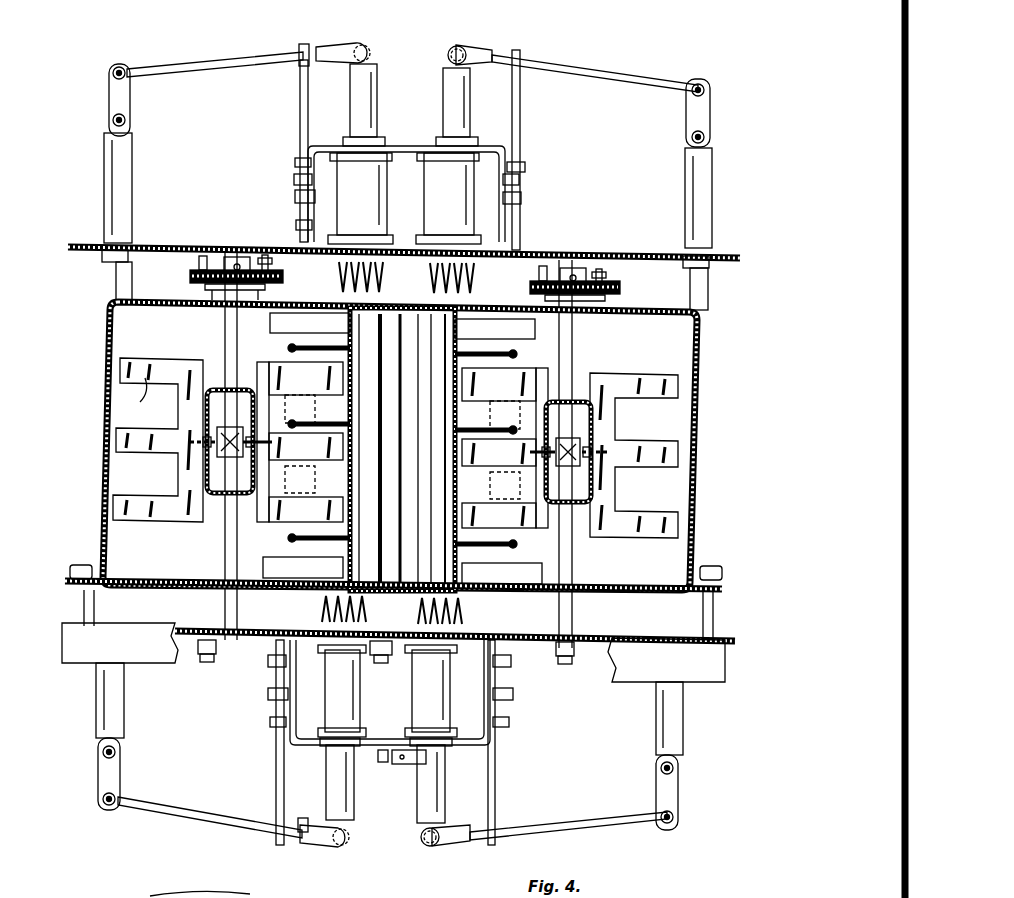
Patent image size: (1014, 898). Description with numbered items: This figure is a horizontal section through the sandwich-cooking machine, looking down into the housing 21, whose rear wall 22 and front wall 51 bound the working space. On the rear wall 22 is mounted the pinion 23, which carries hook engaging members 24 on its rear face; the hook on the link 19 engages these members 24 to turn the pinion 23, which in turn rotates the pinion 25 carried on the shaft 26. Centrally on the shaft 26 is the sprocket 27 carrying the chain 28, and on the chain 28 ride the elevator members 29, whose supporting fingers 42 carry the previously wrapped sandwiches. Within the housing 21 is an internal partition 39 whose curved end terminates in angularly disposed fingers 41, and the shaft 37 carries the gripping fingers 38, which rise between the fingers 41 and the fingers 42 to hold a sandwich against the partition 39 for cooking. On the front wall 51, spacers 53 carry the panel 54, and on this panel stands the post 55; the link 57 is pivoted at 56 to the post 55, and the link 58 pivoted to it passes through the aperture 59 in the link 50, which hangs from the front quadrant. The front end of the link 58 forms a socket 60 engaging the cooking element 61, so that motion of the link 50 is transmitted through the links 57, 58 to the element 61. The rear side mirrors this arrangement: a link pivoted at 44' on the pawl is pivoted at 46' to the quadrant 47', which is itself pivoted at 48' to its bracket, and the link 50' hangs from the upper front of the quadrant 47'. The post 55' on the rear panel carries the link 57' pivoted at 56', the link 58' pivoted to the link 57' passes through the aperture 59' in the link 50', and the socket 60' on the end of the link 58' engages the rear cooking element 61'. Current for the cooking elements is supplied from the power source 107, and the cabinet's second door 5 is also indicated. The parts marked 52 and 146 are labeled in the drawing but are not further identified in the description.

The link 58' is at (215, 56).
The aperture 59' is at (320, 43).
The socket 60' is at (354, 37).
The link 57' is at (102, 100).
The pivot 56' is at (139, 96).
The post 55' is at (135, 217).
The link 50' is at (285, 151).
The cooking element 61' is at (417, 95).
The quadrant 47' is at (282, 152).
The pivot 48' is at (280, 172).
The pivot 46' is at (286, 192).
The pivot 44' is at (390, 194).
The link 19 is at (200, 262).
The hook engaging members 24 is at (212, 266).
The pinion 25 is at (234, 256).
The shaft 26 is at (252, 262).
The pinion 23 is at (200, 274).
The rear wall 22 is at (195, 294).
The shaft 37 is at (356, 300).
The elevator members 29 is at (175, 358).
The fingers 42 is at (143, 394).
The housing 21 is at (106, 430).
The sprocket 27 is at (210, 462).
The chain 28 is at (256, 442).
The gripping fingers 38 is at (290, 348).
The internal partition 39 is at (356, 484).
The fingers 41 is at (264, 562).
The lower plate 52 is at (70, 576).
The spacers 53 is at (82, 601).
The front wall 51 is at (180, 594).
The panel 54 is at (70, 648).
The second door 5 is at (322, 603).
The post 55 is at (372, 709).
The pivot 56 is at (388, 783).
The link 57 is at (388, 784).
The link 58 is at (392, 811).
The link 50 is at (378, 742).
The cooking element 61 is at (374, 780).
The aperture 59 is at (306, 814).
The socket 60 is at (380, 847).
The lower cylinder 146 is at (402, 692).
The power source 107 is at (188, 894).